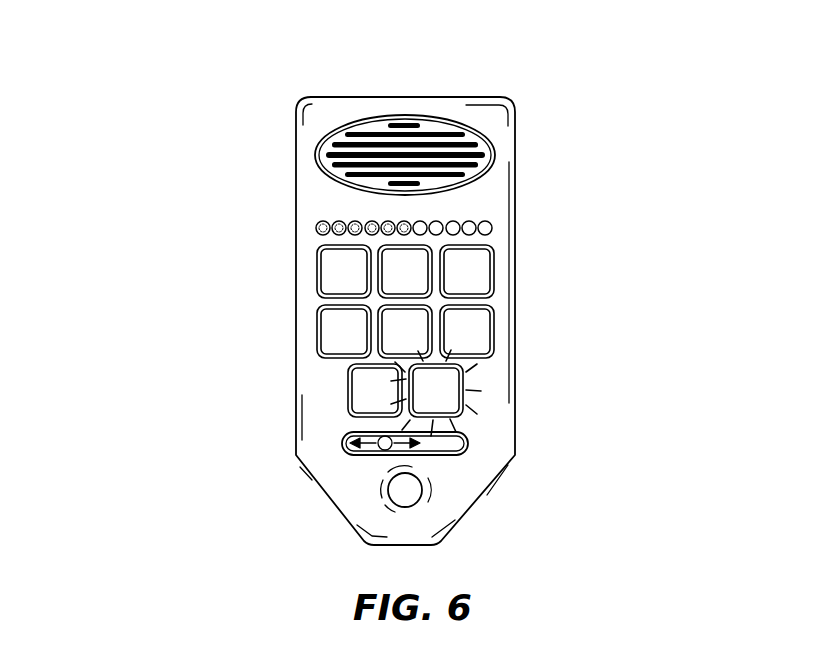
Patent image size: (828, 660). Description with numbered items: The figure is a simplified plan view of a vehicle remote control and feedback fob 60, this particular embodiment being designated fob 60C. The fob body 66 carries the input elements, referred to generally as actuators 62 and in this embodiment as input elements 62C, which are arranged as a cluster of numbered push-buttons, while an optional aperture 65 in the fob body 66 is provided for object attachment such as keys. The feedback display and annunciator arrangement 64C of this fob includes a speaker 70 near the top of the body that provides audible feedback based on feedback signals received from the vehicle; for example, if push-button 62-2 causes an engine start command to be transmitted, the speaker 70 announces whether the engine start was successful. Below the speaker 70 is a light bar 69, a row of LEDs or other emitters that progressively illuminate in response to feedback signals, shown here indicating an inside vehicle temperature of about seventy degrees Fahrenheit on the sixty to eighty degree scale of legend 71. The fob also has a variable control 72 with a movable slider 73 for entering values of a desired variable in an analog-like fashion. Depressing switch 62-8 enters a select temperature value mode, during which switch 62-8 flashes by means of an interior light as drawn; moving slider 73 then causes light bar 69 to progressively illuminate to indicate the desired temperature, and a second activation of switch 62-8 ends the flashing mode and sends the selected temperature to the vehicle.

The fob 60 is at (574, 412).
The fob 60C is at (574, 189).
The actuators 62 is at (199, 322).
The input elements 62C is at (290, 248).
The push-button 62-2 is at (433, 268).
The switch 62-8 is at (480, 392).
The function status display or audio annunciator 64C is at (202, 134).
The aperture 65 is at (425, 488).
The fob body 66 is at (407, 97).
The light bar 69 is at (493, 231).
The speaker 70 is at (316, 155).
The legend 71 is at (284, 228).
The variable control 72 is at (468, 443).
The slider 73 is at (358, 455).